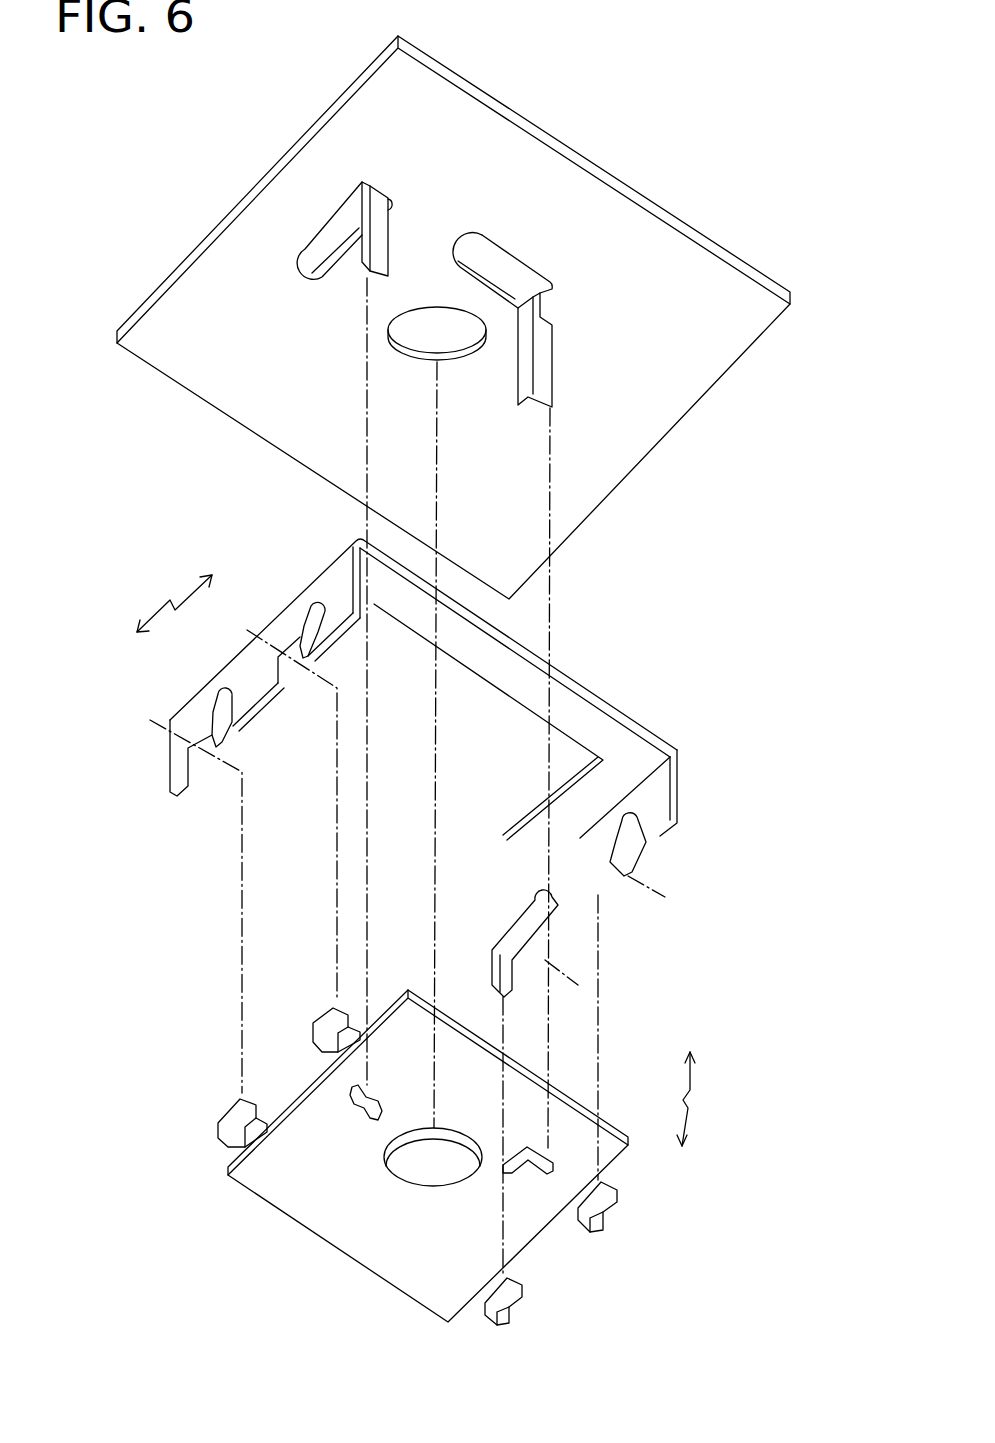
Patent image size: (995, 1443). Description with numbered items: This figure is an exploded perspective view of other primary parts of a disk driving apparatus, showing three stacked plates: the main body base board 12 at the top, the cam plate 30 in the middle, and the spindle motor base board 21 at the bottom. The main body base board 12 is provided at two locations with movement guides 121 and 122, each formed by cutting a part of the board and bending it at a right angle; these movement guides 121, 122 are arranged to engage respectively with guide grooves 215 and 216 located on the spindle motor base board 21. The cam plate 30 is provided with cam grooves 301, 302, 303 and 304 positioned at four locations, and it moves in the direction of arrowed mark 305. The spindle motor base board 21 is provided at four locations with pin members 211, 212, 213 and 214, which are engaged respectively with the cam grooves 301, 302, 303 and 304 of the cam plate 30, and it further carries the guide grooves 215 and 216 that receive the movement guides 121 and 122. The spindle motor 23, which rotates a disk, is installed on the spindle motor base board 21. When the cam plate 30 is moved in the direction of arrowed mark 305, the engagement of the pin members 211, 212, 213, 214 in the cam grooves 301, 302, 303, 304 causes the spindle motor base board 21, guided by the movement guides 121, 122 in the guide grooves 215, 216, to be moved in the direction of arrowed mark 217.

The main body base board 12 is at (628, 237).
The movement guide 121 is at (382, 231).
The movement guide 122 is at (542, 350).
The cam plate 30 is at (437, 768).
The cam groove 301 is at (228, 692).
The cam groove 302 is at (320, 604).
The cam groove 303 is at (655, 831).
The cam groove 304 is at (548, 902).
The arrowed mark 305 is at (172, 588).
The spindle motor base board 21 is at (457, 1156).
The pin member 211 is at (222, 1110).
The pin member 212 is at (327, 1013).
The pin member 213 is at (617, 1188).
The pin member 214 is at (508, 1303).
The guide groove 215 is at (352, 1090).
The guide groove 216 is at (537, 1173).
The arrowed mark 217 is at (723, 1099).
The spindle motor 23 is at (402, 1182).